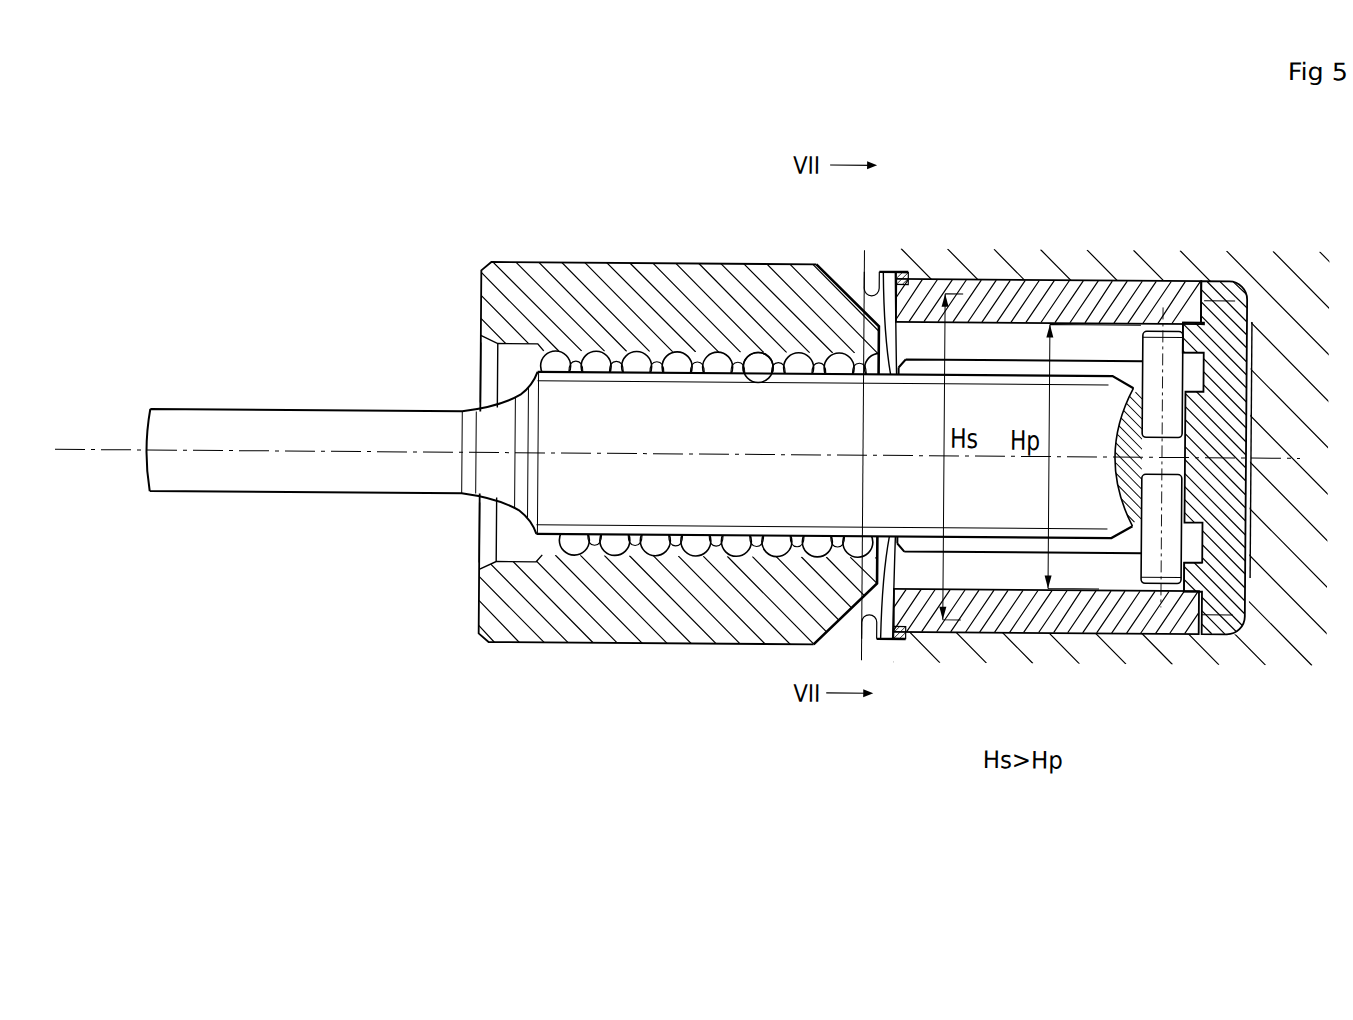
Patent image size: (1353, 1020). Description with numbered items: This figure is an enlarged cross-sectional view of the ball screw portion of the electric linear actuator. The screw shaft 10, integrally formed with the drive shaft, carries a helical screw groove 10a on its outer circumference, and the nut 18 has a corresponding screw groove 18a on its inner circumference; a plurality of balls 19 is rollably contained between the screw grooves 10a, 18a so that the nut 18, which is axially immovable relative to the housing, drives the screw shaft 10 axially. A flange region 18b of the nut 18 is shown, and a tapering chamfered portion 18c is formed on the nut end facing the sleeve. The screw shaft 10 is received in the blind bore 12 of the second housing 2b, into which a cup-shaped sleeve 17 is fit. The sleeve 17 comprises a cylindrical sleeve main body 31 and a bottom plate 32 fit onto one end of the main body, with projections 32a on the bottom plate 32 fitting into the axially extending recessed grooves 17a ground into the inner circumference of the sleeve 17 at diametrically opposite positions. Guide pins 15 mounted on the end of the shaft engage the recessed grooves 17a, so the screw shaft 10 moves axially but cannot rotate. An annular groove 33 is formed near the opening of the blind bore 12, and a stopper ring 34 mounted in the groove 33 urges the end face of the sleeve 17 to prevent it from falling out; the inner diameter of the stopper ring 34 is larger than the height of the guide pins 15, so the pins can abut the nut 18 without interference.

The screw shaft 10 is at (330, 408).
The helical screw groove 10a is at (658, 540).
The blind bore 12 is at (1017, 273).
The guide pin 15 is at (1153, 413).
The sleeve 17 is at (1202, 193).
The recessed groove 17a is at (978, 331).
The nut 18 is at (597, 270).
The screw groove 18a is at (633, 370).
The flange portion 18b is at (526, 259).
The tapering chamfered portion 18c is at (867, 265).
The ball 19 is at (755, 378).
The second housing 2b is at (1253, 259).
The sleeve main body 31 is at (1110, 302).
The bottom plate 32 is at (1212, 292).
The projection 32a is at (1192, 334).
The annular groove 33 is at (904, 266).
The stopper ring 34 is at (886, 264).